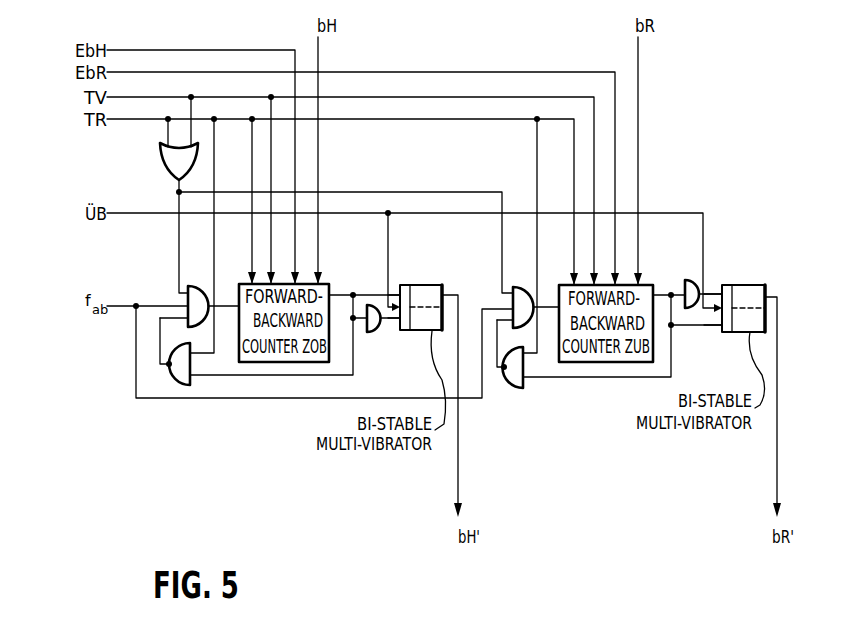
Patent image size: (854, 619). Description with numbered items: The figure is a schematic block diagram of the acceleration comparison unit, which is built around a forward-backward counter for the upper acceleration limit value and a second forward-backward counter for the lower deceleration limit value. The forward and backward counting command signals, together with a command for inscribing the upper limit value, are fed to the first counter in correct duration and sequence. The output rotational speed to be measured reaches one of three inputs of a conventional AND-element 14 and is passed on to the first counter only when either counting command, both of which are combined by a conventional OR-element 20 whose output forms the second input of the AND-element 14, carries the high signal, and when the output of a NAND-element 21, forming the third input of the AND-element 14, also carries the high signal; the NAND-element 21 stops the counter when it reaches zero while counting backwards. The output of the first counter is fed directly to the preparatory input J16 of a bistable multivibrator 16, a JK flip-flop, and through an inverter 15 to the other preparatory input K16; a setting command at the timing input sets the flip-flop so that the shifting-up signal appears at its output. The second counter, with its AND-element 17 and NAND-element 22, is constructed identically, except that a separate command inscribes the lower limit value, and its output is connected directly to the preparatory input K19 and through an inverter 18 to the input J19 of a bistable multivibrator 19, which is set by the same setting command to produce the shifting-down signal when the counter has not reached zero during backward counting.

The AND-element 14 is at (204, 286).
The inverter 15 is at (372, 332).
The bistable multivibrator 16 is at (440, 285).
The AND-element 17 is at (530, 288).
The inverter 18 is at (690, 280).
The bistable multivibrator 19 is at (758, 285).
The OR-element 20 is at (160, 170).
The NAND-element 21 is at (186, 385).
The NAND-element 22 is at (525, 388).
The preparatory input J16 is at (397, 284).
The preparatory input K16 is at (397, 331).
The preparatory input J19 is at (716, 285).
The preparatory input K19 is at (700, 326).